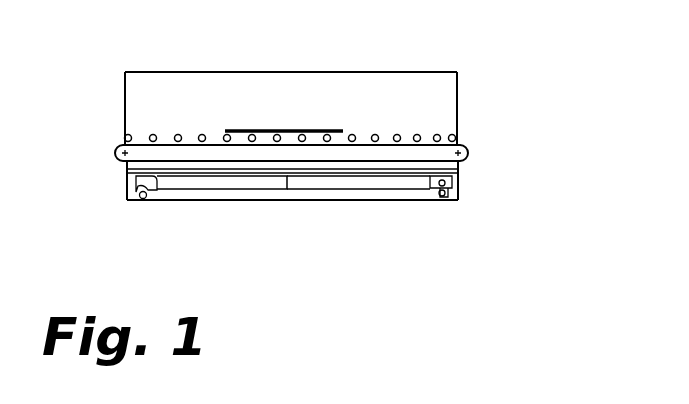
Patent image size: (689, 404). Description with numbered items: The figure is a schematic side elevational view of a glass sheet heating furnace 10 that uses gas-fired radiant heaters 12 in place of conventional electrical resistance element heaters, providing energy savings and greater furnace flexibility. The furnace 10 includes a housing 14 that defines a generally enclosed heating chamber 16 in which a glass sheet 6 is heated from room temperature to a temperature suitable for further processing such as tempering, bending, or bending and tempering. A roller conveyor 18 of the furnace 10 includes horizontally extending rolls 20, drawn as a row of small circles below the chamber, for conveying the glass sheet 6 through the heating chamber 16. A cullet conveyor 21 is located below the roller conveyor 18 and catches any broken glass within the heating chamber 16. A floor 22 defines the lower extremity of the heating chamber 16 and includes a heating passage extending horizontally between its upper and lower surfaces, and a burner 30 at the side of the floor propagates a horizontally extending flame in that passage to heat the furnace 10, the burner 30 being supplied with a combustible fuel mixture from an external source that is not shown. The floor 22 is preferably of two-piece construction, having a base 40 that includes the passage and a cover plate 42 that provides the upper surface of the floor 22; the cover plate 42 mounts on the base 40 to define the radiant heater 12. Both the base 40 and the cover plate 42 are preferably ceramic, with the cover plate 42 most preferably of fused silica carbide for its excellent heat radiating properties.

The glass sheet 6 is at (300, 128).
The glass sheet heating furnace 10 is at (505, 87).
The gas-fired radiant heater 12 is at (190, 202).
The housing 14 is at (123, 100).
The heating chamber 16 is at (204, 96).
The roller conveyor 18 is at (442, 127).
The rolls 20 is at (468, 148).
The cullet conveyor 21 is at (466, 157).
The floor 22 is at (114, 175).
The burner 30 is at (128, 202).
The base 40 is at (300, 180).
The cover plate 42 is at (348, 170).